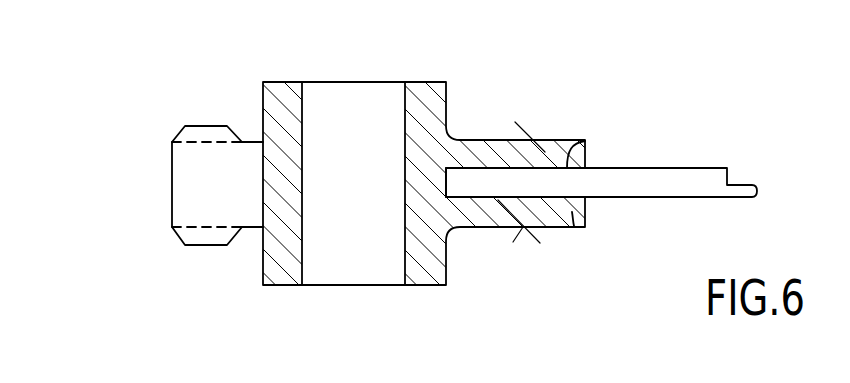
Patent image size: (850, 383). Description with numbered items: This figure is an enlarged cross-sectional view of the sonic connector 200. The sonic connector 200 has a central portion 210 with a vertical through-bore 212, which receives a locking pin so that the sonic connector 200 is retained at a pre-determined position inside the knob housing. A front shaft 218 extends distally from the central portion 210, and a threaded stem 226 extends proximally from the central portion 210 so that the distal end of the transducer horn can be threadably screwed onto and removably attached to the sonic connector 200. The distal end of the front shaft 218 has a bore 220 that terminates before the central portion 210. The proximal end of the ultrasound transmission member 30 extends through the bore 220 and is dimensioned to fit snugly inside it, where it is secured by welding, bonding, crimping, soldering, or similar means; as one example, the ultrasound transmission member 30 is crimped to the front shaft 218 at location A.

The sonic connector 200 is at (412, 378).
The central portion 210 is at (411, 60).
The vertical through-bore 212 is at (328, 257).
The front shaft 218 is at (581, 223).
The bore 220 is at (575, 152).
The threaded stem 226 is at (188, 197).
The ultrasound transmission member 30 is at (662, 168).
The location A is at (530, 131).